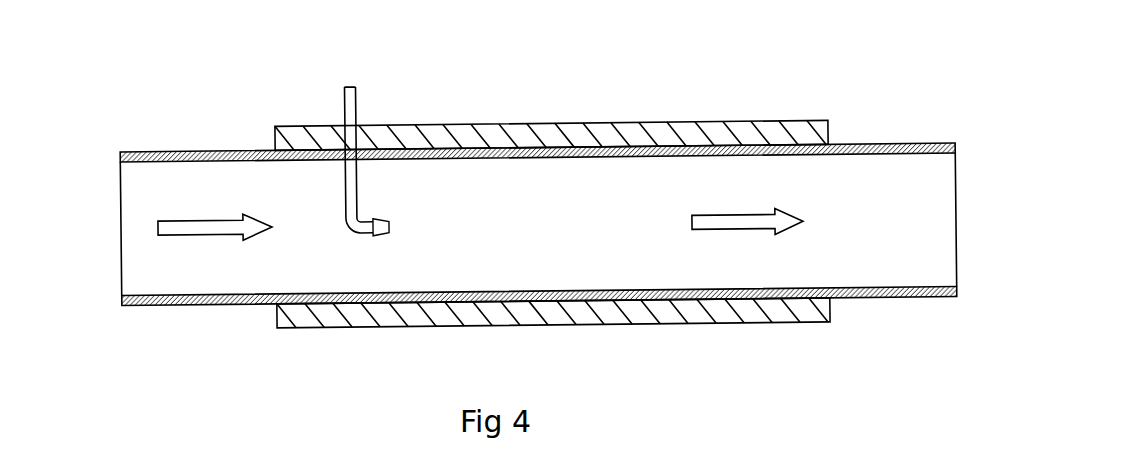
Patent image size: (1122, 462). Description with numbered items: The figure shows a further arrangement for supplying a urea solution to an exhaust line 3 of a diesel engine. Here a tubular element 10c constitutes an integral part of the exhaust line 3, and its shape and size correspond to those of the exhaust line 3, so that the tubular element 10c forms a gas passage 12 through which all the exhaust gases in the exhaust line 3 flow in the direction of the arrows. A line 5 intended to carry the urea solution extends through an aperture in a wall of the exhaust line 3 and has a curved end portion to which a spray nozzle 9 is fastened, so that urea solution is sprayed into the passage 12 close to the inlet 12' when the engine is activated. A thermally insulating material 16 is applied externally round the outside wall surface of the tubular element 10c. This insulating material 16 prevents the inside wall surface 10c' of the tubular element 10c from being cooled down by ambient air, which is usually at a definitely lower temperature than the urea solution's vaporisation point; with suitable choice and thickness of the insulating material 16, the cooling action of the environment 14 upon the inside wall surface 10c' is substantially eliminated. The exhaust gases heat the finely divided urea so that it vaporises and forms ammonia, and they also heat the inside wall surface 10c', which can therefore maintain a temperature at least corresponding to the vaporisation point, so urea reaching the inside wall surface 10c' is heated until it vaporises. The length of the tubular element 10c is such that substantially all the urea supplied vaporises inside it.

The exhaust line 3 is at (535, 178).
The line 5 is at (387, 136).
The spray nozzle 9 is at (389, 222).
The first exhaust passage 12 is at (553, 288).
The inlet 12' is at (220, 296).
The environment 14 is at (512, 43).
The thermally insulating material 16 is at (598, 141).
The tubular element 10c is at (551, 92).
The inside wall surface 10c' is at (539, 266).